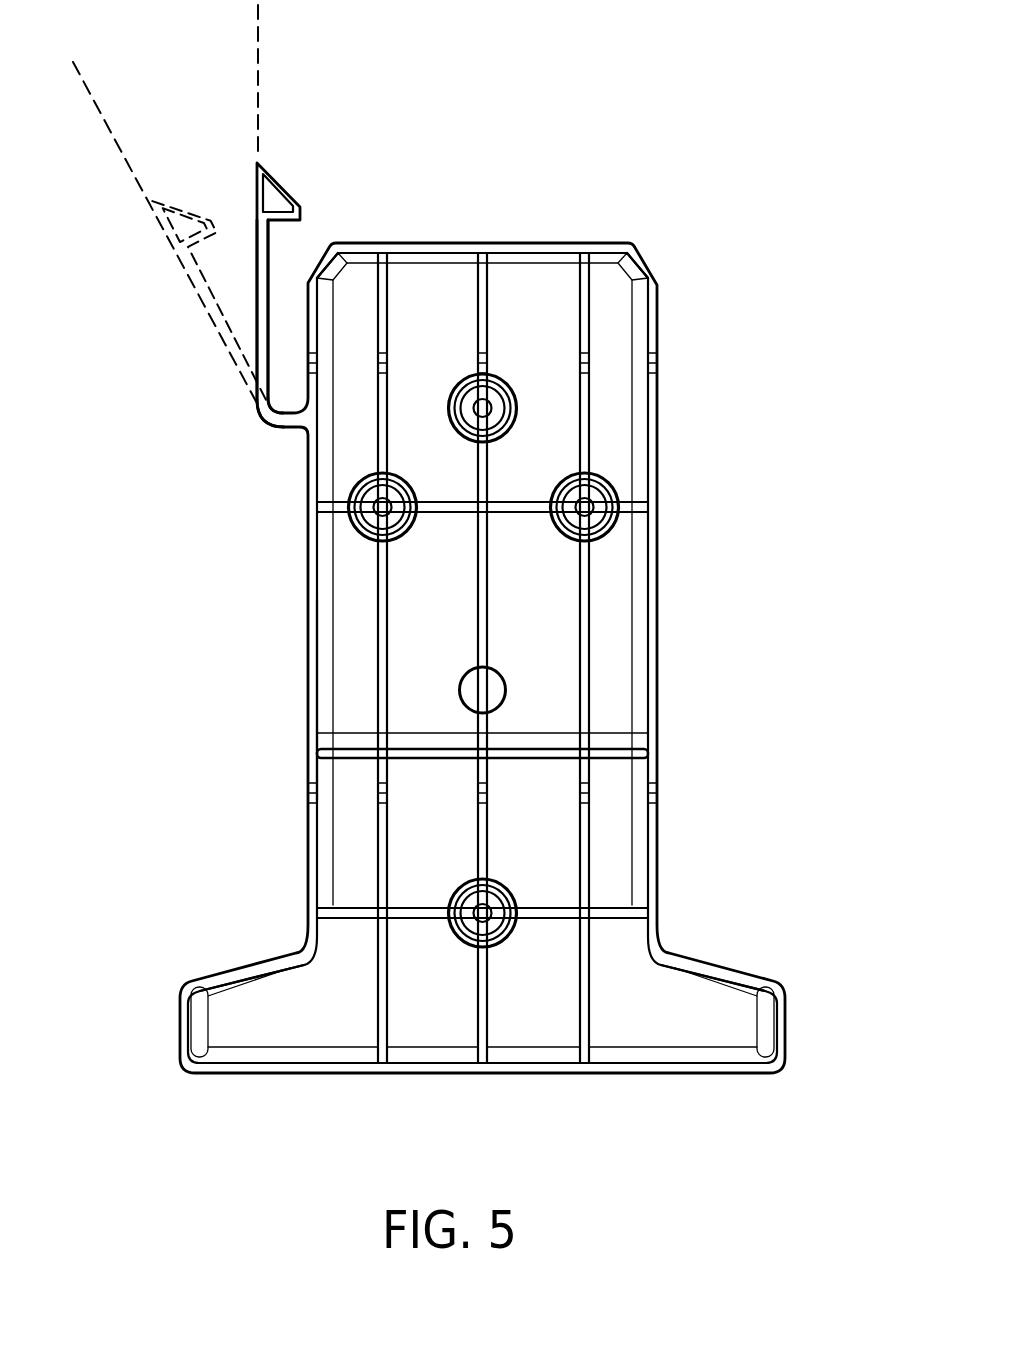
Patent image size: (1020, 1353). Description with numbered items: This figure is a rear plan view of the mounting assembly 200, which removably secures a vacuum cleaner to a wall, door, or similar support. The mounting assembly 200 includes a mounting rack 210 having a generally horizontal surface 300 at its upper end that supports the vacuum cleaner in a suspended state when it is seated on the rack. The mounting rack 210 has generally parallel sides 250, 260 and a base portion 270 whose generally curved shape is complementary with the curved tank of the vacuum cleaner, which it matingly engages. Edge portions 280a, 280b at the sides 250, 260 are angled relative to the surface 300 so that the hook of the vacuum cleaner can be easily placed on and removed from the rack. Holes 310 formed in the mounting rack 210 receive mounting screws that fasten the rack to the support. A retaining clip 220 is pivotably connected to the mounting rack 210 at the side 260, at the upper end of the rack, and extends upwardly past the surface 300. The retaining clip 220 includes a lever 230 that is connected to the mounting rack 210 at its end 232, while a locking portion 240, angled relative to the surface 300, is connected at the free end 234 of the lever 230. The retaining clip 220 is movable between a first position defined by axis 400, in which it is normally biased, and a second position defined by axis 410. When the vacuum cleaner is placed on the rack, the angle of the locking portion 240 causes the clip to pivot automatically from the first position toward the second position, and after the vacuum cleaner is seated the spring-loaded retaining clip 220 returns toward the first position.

The mounting assembly 200 is at (733, 138).
The mounting rack 210 is at (658, 309).
The retaining clip 220 is at (304, 135).
The lever 230 is at (270, 250).
The end of the lever 232 is at (256, 400).
The free end of the lever 234 is at (258, 231).
The locking portion 240 is at (284, 186).
The side 250 is at (658, 686).
The side 260 is at (305, 712).
The base portion 270 is at (238, 962).
The edge portion 280a is at (327, 252).
The edge portion 280b is at (650, 263).
The surface 300 is at (550, 242).
The holes 310 is at (491, 378).
The axis 400 is at (262, 98).
The axis 410 is at (107, 117).